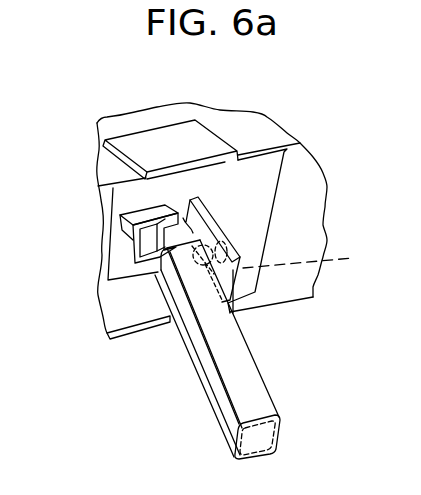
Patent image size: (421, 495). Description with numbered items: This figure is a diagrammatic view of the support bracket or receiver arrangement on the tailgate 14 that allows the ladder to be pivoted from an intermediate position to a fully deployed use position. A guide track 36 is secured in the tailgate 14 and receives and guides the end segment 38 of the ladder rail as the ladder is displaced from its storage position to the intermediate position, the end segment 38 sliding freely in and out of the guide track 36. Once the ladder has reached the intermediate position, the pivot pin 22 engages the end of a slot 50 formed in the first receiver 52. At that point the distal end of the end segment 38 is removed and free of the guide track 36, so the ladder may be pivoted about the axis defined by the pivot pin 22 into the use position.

The tailgate 14 is at (261, 138).
The guide track 36 is at (127, 234).
The end segment 38 is at (253, 383).
The slot 50 is at (205, 246).
The first receiver 52 is at (242, 250).
The pivot pin 22 is at (313, 261).